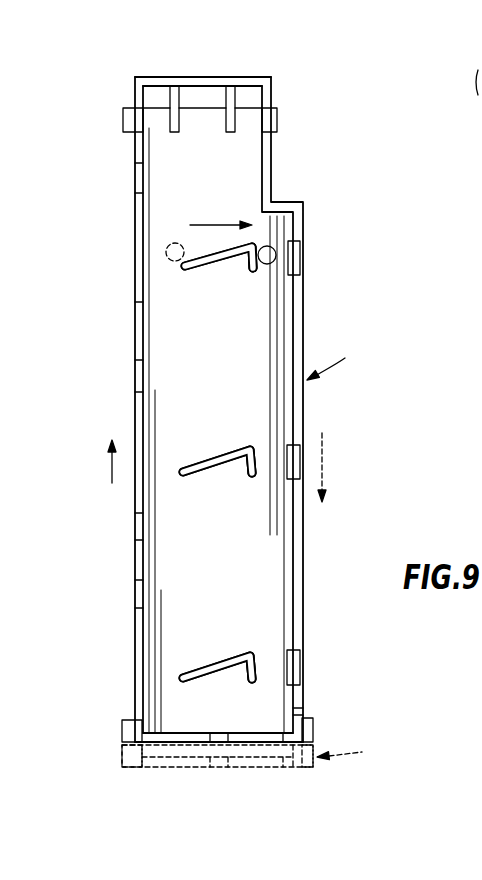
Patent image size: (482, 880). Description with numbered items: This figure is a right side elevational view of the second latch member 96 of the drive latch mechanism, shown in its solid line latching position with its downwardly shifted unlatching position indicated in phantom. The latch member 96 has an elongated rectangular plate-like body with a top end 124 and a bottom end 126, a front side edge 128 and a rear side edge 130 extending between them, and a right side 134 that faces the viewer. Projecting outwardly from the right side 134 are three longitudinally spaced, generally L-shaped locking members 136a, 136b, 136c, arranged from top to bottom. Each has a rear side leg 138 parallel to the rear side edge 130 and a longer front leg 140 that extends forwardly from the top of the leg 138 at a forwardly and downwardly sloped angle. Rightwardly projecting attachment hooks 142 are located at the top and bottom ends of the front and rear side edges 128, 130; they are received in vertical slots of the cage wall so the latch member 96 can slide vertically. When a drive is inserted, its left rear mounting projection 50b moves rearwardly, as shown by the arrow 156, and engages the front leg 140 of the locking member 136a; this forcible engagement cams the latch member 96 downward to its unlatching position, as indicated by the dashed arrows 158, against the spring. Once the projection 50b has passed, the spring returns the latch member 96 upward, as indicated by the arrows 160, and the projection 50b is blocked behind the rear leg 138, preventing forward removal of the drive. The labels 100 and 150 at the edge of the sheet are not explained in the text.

The top end 124 is at (203, 77).
The bottom end 126 is at (153, 768).
The front side edge 128 is at (135, 262).
The rear side edge 130 is at (303, 410).
The right side 134 is at (230, 401).
The locking member 136a is at (192, 292).
The locking member 136b is at (192, 482).
The locking member 136c is at (200, 661).
The rear side leg 138 is at (250, 272).
The front leg 140 is at (217, 266).
The attachment hooks 142 is at (123, 121).
The drive mounting projection 50b is at (167, 246).
The second latch member 96 is at (349, 548).
The housing 100 is at (478, 82).
The cover 150 is at (481, 130).
The arrow 156 is at (222, 225).
The dashed arrows 158 is at (322, 465).
The arrows 160 is at (83, 461).